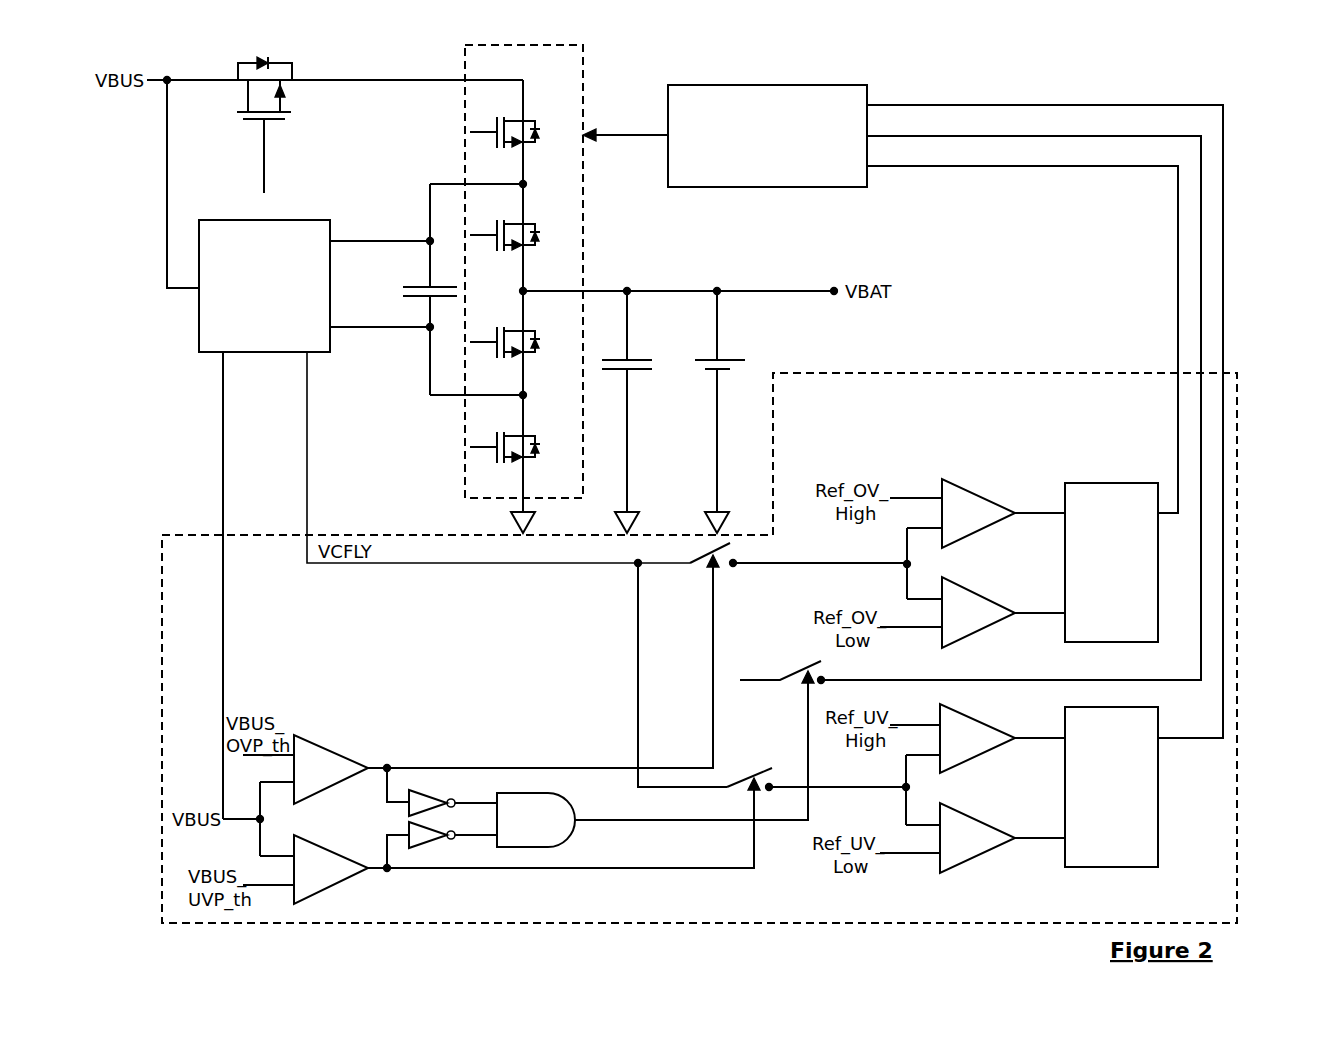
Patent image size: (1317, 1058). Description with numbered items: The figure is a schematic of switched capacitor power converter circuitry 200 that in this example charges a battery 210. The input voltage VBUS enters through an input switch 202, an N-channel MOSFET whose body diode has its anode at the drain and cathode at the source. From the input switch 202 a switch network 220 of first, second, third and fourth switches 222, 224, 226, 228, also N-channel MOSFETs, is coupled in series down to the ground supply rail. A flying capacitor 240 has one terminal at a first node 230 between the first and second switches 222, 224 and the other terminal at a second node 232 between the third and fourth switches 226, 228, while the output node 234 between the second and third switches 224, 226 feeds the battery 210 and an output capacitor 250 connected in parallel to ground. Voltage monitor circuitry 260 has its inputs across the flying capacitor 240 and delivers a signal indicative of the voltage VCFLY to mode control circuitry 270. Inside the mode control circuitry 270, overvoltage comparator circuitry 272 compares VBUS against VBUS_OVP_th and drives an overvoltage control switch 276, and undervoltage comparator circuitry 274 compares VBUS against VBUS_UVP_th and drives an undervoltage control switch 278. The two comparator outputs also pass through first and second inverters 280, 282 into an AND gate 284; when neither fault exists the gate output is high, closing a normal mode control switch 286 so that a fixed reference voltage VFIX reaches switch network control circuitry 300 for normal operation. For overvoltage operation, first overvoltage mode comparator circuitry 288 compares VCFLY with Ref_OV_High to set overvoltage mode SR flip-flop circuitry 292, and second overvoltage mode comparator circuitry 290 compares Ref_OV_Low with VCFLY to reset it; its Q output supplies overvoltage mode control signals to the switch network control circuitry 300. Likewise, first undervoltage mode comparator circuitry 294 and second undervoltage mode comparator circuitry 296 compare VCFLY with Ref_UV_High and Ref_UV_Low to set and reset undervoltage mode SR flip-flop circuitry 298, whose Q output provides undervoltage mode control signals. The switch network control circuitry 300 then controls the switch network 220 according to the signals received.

The switched capacitor power converter circuitry 200 is at (1250, 108).
The input switch 202 is at (284, 122).
The battery 210 is at (726, 373).
The switch network 220 is at (524, 289).
The first switch 222 is at (512, 461).
The second switch 224 is at (512, 356).
The third switch 226 is at (512, 249).
The fourth switch 228 is at (512, 146).
The first node 230 is at (526, 394).
The second node 232 is at (526, 183).
The output node 234 is at (526, 290).
The flying capacitor 240 is at (420, 284).
The output capacitor 250 is at (640, 373).
The voltage monitor circuitry 260 is at (264, 286).
The mode control circuitry 270 is at (699, 648).
The overvoltage comparator circuitry 272 is at (305, 769).
The undervoltage comparator circuitry 274 is at (305, 869).
The overvoltage control switch 276 is at (693, 565).
The undervoltage control switch 278 is at (755, 775).
The first inverter 280 is at (422, 790).
The second inverter 282 is at (428, 840).
The AND gate 284 is at (536, 820).
The normal mode control switch 286 is at (790, 665).
The first overvoltage mode comparator circuitry 288 is at (977, 513).
The second overvoltage mode comparator circuitry 290 is at (972, 612).
The overvoltage mode SR flip-flop circuitry 292 is at (1111, 562).
The first undervoltage mode comparator circuitry 294 is at (977, 738).
The second undervoltage mode comparator circuitry 296 is at (972, 838).
The undervoltage mode SR flip-flop circuitry 298 is at (1111, 787).
The switch network control circuitry 300 is at (767, 136).